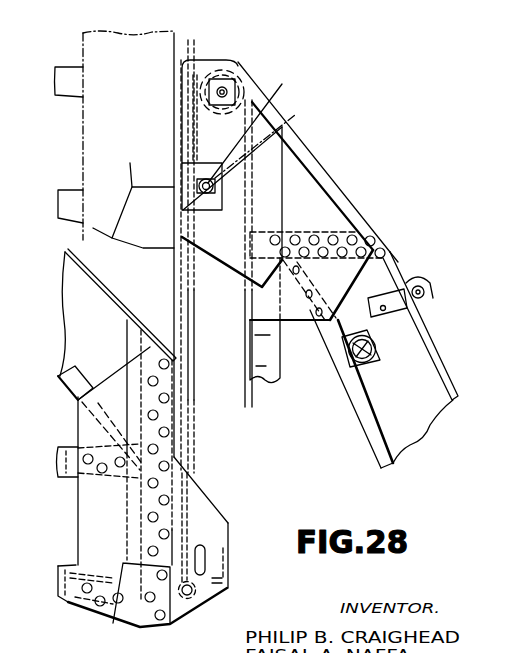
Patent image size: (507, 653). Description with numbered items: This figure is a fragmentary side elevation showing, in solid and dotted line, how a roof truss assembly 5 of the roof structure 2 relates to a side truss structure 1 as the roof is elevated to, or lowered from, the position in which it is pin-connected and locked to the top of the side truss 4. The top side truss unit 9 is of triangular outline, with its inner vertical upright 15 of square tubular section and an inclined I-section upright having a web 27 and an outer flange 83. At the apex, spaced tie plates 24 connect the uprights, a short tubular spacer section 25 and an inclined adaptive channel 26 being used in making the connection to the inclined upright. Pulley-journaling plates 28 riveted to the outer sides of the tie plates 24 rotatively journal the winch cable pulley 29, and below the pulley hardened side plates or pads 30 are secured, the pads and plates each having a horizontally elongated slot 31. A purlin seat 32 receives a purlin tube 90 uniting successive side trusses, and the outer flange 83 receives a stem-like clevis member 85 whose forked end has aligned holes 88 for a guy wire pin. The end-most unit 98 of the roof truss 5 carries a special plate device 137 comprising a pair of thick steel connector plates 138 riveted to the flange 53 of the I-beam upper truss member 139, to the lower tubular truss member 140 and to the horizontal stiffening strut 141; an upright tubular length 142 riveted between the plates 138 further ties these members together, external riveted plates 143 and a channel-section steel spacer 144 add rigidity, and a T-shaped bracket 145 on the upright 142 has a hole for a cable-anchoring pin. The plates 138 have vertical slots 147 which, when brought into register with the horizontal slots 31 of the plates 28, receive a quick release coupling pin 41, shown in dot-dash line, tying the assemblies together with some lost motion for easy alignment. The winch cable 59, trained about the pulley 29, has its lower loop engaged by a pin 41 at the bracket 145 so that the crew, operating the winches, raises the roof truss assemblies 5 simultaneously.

The side truss structure 1 is at (384, 175).
The roof structure 2 is at (68, 623).
The side truss 4 is at (0, 503).
The roof truss assembly 5 is at (96, 240).
The top side truss unit 9 is at (432, 344).
The inner vertical upright 15 is at (268, 378).
The tie plates 24 is at (310, 326).
The tubular spacer section 25 is at (340, 214).
The adaptive channel 26 is at (303, 153).
The web 27 is at (74, 351).
The pulley-journaling plates 28 is at (238, 243).
The winch cable pulley 29 is at (231, 72).
The side plates or pads 30 is at (244, 142).
The horizontally elongated slot 31 is at (258, 117).
The purlin seat 32 is at (373, 366).
The quick release coupling pin 41 is at (210, 614).
The flange 53 is at (78, 385).
The winch cable 59 is at (243, 352).
The outer flange 83 is at (65, 253).
The clevis member 85 is at (412, 287).
The aligned holes 88 is at (429, 290).
The purlin tubes 90 is at (375, 345).
The end-most unit 98 is at (83, 107).
The plate device 137 is at (83, 47).
The connector plates 138 is at (176, 55).
The upper truss member 139 is at (62, 299).
The lower tubular truss member 140 is at (68, 592).
The stiffening strut 141 is at (64, 446).
The upright tubular length 142 is at (140, 490).
The external riveted plates 143 is at (131, 168).
The spacer 144 is at (235, 568).
The T-shaped bracket 145 is at (233, 598).
The vertical slots 147 is at (205, 183).